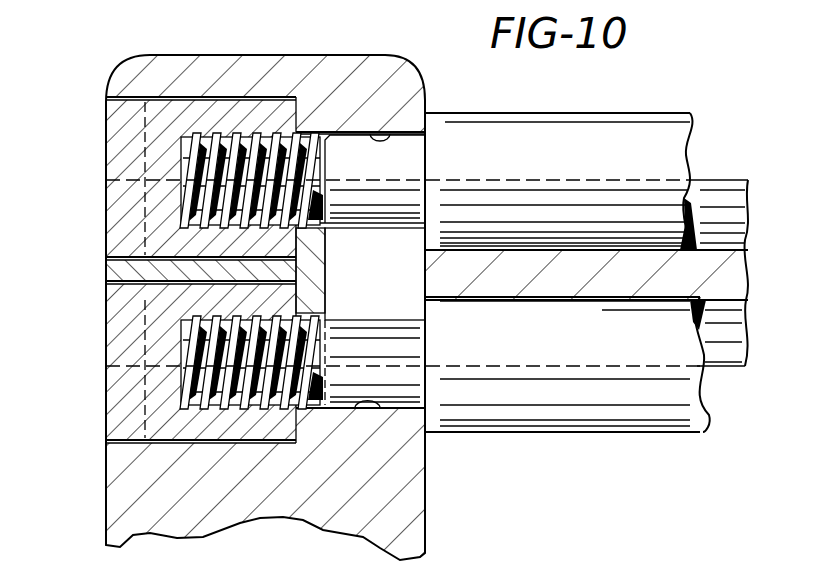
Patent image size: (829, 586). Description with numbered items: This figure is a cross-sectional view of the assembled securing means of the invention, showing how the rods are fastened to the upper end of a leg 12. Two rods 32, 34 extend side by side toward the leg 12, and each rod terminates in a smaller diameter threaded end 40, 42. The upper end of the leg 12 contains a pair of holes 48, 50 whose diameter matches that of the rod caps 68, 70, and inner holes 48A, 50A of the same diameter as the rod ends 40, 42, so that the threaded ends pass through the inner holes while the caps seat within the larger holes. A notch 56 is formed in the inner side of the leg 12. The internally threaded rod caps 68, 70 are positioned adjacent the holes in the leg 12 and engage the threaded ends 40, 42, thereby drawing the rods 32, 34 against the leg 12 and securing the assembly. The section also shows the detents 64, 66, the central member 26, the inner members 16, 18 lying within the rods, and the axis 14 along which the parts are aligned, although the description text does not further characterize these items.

The leg 12 is at (364, 56).
The longitudinal axis 14 is at (112, 180).
The upper inner shaft 16 is at (720, 248).
The lower inner shaft 18 is at (730, 366).
The central member 26 is at (382, 285).
The rod 32 is at (601, 113).
The rod 34 is at (608, 432).
The threaded end 40 is at (186, 178).
The threaded end 42 is at (186, 366).
The hole 48 is at (106, 111).
The inner hole 48A is at (391, 133).
The hole 50 is at (110, 440).
The inner hole 50A is at (423, 447).
The notch 56 is at (340, 235).
The upper detent 64 is at (425, 138).
The lower detent 66 is at (417, 405).
The rod cap 68 is at (106, 236).
The rod cap 70 is at (106, 322).